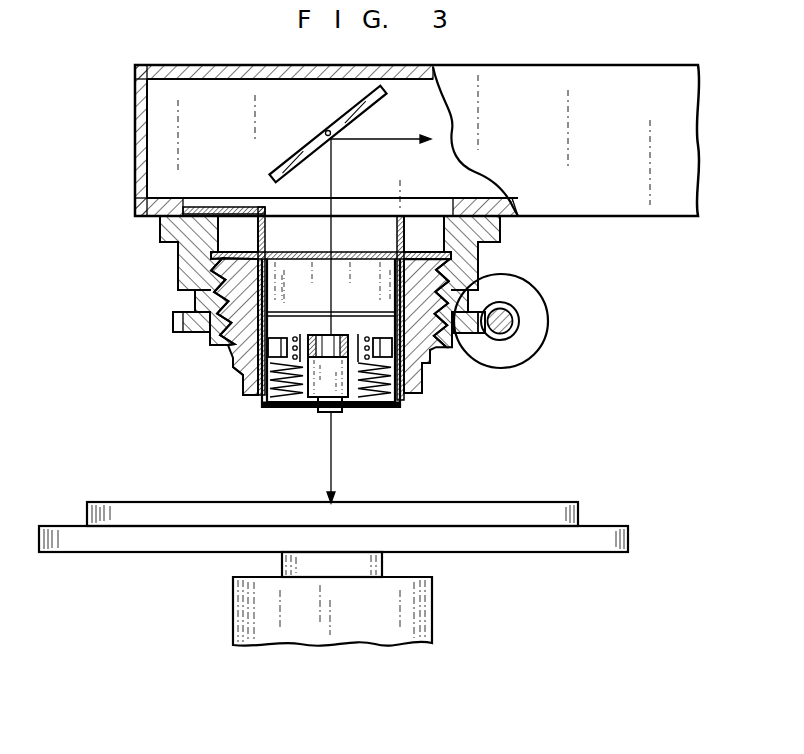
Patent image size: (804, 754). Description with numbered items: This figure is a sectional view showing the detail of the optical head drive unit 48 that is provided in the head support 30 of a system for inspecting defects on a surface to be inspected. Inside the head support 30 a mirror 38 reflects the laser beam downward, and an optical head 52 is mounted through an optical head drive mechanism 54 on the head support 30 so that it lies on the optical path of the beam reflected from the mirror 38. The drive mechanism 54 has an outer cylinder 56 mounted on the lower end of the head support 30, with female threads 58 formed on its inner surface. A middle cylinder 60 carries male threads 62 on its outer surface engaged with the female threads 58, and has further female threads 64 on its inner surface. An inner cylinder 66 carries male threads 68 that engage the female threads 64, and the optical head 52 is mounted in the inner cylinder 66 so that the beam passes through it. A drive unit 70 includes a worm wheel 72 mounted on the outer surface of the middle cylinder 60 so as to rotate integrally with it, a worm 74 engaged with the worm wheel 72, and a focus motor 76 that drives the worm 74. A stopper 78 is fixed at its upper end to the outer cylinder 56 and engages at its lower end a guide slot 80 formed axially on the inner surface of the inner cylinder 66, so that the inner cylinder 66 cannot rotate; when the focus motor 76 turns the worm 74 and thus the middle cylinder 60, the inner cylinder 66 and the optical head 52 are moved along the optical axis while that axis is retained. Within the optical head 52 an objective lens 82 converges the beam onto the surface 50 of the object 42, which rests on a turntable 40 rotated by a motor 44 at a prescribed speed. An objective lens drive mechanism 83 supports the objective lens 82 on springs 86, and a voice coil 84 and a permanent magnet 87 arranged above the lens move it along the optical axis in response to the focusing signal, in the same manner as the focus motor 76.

The head support 30 is at (134, 135).
The mirror 38 is at (318, 152).
The turntable 40 is at (630, 539).
The object 42 is at (361, 492).
The motor 44 is at (433, 607).
The optical head drive unit 48 is at (118, 262).
The surface 50 is at (549, 501).
The optical head 52 is at (312, 355).
The optical head drive mechanism 54 is at (147, 347).
The outer cylinder 56 is at (183, 262).
The female threads 58 is at (190, 277).
The middle cylinder 60 is at (197, 300).
The male threads 62 is at (331, 237).
The female threads 64 is at (213, 345).
The inner cylinder 66 is at (238, 382).
The male threads 68 is at (434, 353).
The drive unit 70 is at (521, 312).
The worm wheel 72 is at (192, 335).
The worm 74 is at (520, 314).
The focus motor 76 is at (537, 350).
The stopper 78 is at (229, 207).
The guide slot 80 is at (278, 406).
The objective lens 82 is at (336, 412).
The objective lens drive mechanism 83 is at (297, 329).
The voice coil 84 is at (360, 334).
The springs 86 is at (300, 402).
The permanent magnet 87 is at (311, 334).